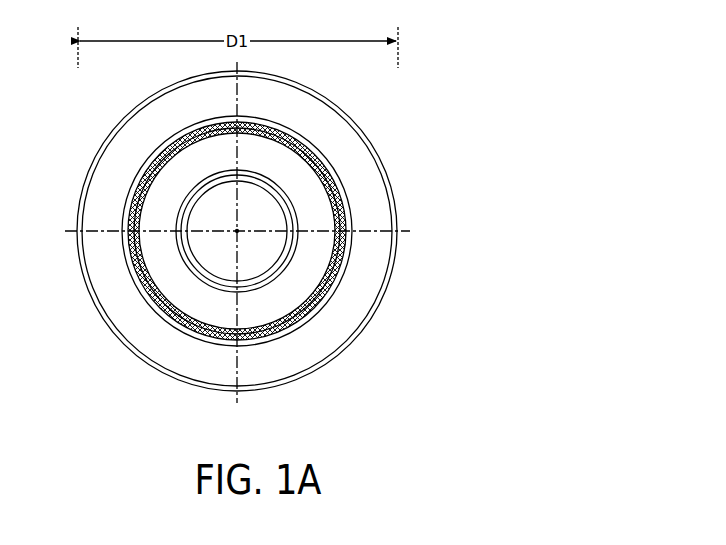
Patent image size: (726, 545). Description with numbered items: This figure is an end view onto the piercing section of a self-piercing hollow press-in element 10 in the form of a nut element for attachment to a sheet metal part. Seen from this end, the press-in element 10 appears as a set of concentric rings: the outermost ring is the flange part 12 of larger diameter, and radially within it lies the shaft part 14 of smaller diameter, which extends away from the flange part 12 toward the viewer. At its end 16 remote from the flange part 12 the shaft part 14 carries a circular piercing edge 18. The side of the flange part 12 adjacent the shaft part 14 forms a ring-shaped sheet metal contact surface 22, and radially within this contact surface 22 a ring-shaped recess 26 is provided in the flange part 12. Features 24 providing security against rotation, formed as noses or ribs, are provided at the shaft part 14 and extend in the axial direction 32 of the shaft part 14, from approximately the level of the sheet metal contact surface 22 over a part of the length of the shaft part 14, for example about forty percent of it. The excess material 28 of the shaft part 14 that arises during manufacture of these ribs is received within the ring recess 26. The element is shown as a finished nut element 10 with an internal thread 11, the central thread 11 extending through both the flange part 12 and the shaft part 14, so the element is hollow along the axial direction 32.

The press-in element 10 is at (413, 183).
The internal thread 11 is at (212, 265).
The flange part 12 is at (365, 168).
The shaft part 14 is at (317, 245).
The end of the shaft part 16 is at (197, 305).
The piercing edge 18 is at (310, 320).
The sheet metal contact surface 22 is at (278, 353).
The features providing security against rotation 24 is at (155, 310).
The ring-shaped recess 26 is at (140, 300).
The excess material 28 is at (292, 131).
The axial direction 32 is at (238, 230).